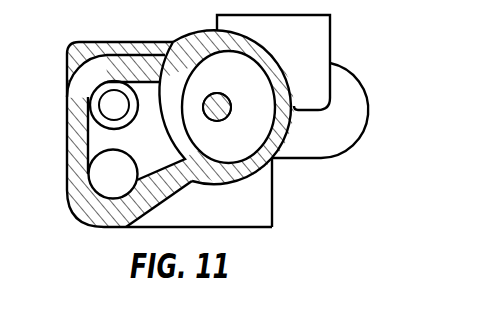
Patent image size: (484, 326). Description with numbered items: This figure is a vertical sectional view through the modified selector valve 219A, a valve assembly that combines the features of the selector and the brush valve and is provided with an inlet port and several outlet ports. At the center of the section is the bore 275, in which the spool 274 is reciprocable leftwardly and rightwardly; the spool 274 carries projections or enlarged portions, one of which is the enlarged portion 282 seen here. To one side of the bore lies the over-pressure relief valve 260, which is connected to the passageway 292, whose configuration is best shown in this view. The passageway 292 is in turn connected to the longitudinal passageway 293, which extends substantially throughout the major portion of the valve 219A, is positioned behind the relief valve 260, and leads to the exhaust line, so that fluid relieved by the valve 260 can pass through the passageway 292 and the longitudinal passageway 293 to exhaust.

The over-pressure relief valve 260 is at (116, 86).
The bore 275 is at (230, 72).
The passageway 292 is at (255, 77).
The enlarged portion 282 is at (229, 98).
The spool 274 is at (218, 122).
The longitudinal passageway 293 is at (108, 192).
The selector valve 219A is at (274, 206).